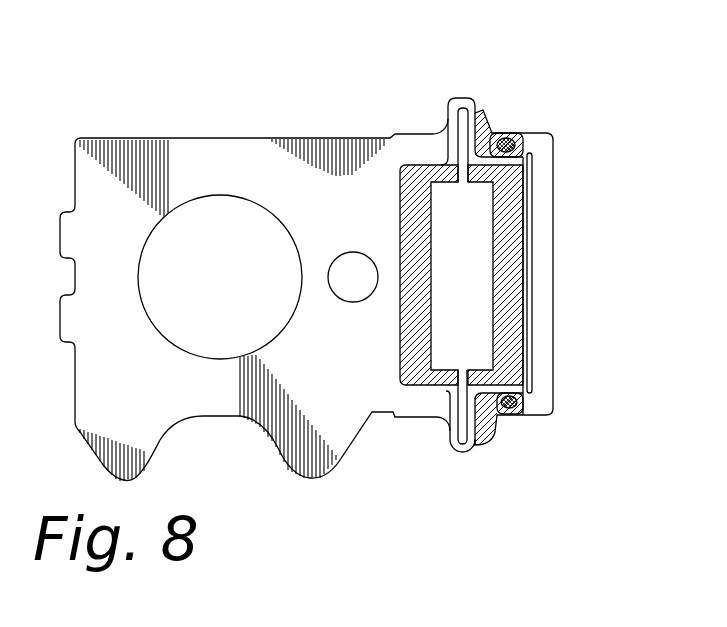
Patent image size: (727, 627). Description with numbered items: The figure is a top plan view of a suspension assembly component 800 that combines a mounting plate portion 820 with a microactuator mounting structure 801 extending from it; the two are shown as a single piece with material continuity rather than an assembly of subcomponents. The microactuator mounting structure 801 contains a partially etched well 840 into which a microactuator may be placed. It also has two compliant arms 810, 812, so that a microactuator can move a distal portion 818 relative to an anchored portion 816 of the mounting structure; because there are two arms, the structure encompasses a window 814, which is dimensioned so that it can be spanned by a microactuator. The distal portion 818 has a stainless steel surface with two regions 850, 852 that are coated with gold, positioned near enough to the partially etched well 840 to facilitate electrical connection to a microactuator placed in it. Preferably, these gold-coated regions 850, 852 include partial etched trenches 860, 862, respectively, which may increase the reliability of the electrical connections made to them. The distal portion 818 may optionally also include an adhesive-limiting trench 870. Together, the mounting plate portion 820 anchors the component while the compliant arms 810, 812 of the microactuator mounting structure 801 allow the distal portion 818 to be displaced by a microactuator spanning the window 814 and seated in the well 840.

The suspension assembly component 800 is at (250, 84).
The microactuator mounting structure 801 is at (471, 457).
The compliant arm 810 is at (445, 110).
The compliant arm 812 is at (446, 436).
The window 814 is at (486, 297).
The anchored portion 816 is at (389, 268).
The distal portion 818 is at (542, 258).
The mounting plate portion 820 is at (158, 143).
The partially etched well 840 is at (406, 355).
The gold-coated region 850 is at (492, 133).
The gold-coated region 852 is at (491, 418).
The partial etched trench 860 is at (506, 145).
The partial etched trench 862 is at (532, 424).
The adhesive-limiting trench 870 is at (534, 312).